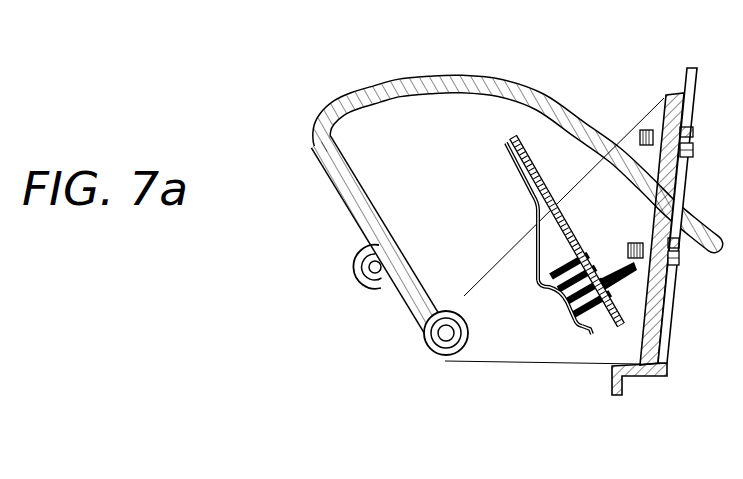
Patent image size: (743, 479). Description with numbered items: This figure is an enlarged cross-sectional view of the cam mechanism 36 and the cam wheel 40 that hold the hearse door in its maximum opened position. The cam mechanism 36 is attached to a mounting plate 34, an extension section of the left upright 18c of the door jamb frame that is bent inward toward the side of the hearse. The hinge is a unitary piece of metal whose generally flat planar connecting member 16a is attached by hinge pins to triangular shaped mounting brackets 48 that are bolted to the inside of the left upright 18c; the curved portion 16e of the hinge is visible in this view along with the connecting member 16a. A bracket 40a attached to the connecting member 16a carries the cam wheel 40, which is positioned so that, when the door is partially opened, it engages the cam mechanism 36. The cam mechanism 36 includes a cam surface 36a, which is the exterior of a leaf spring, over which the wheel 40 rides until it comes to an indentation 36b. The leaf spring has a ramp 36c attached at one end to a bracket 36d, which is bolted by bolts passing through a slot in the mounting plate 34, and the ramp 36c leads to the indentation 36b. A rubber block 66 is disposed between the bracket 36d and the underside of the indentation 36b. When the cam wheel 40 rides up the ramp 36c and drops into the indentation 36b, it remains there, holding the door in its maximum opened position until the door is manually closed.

The connecting member 16a is at (313, 130).
The curved top portion of clamp member 16e is at (404, 82).
The left upright 18c is at (680, 93).
The mounting plate 34 is at (513, 134).
The cam mechanism 36 is at (502, 266).
The cam surface 36a is at (566, 303).
The indentation 36b is at (539, 290).
The ramp 36c is at (540, 263).
The bracket 36d is at (506, 146).
The cam wheel 40 is at (367, 262).
The bracket 40a is at (408, 297).
The mounting brackets 48 is at (467, 293).
The rubber block 66 is at (567, 266).